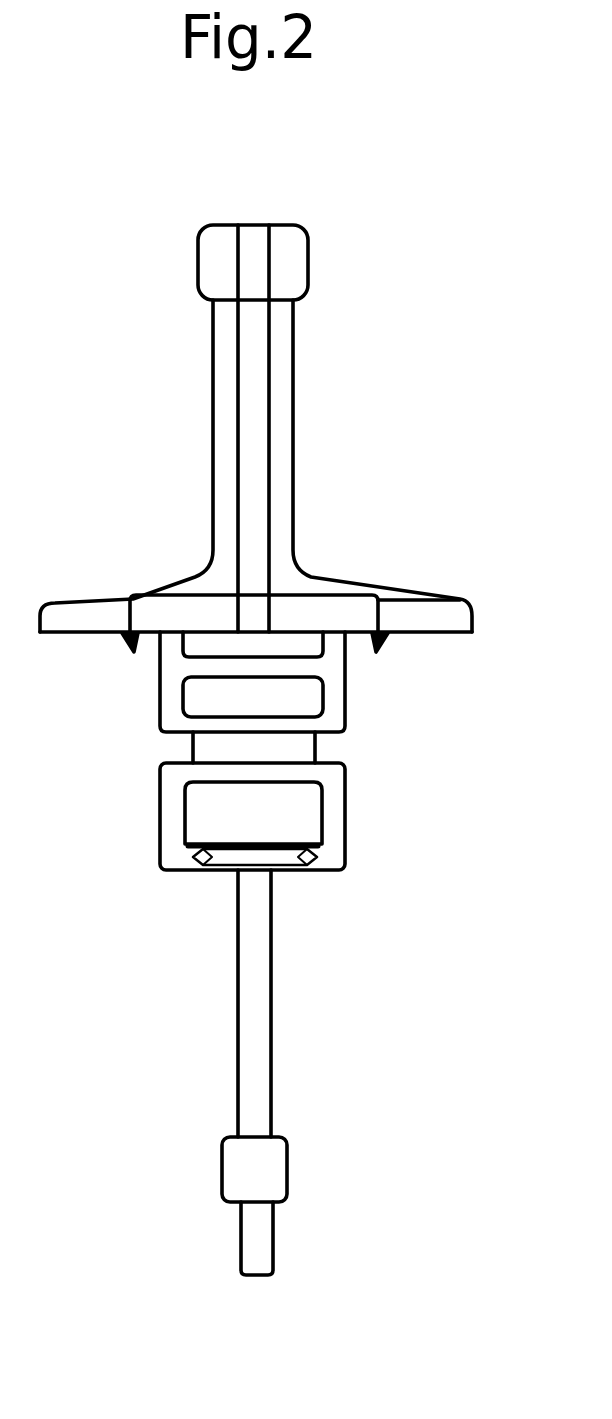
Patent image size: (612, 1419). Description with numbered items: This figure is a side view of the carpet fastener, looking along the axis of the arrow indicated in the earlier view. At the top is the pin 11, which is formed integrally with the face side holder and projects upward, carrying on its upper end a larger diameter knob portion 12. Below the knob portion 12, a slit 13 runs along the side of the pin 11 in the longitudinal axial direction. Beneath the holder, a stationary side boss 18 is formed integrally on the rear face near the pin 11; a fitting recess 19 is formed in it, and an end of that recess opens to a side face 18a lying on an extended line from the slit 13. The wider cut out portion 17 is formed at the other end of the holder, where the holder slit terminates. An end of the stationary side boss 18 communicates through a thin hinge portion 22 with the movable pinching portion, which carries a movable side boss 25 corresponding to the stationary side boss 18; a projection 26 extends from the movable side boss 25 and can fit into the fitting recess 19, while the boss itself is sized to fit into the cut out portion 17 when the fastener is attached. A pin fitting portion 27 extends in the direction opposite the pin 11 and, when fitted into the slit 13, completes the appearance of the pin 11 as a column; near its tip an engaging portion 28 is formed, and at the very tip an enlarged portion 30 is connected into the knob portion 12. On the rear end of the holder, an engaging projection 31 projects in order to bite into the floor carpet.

The pin 11 is at (212, 425).
The knob portion 12 is at (218, 242).
The slit 13 is at (252, 363).
The cut out portion 17 is at (153, 620).
The stationary side boss 18 is at (158, 707).
The side face 18a is at (335, 692).
The fitting recess 19 is at (302, 648).
The thin hinge portion 22 is at (305, 747).
The movable side boss 25 is at (172, 823).
The projection 26 is at (223, 865).
The pin fitting portion 27 is at (260, 962).
The engaging portion 28 is at (265, 1170).
The enlarged portion 30 is at (262, 1260).
The engaging projection 31 is at (125, 638).